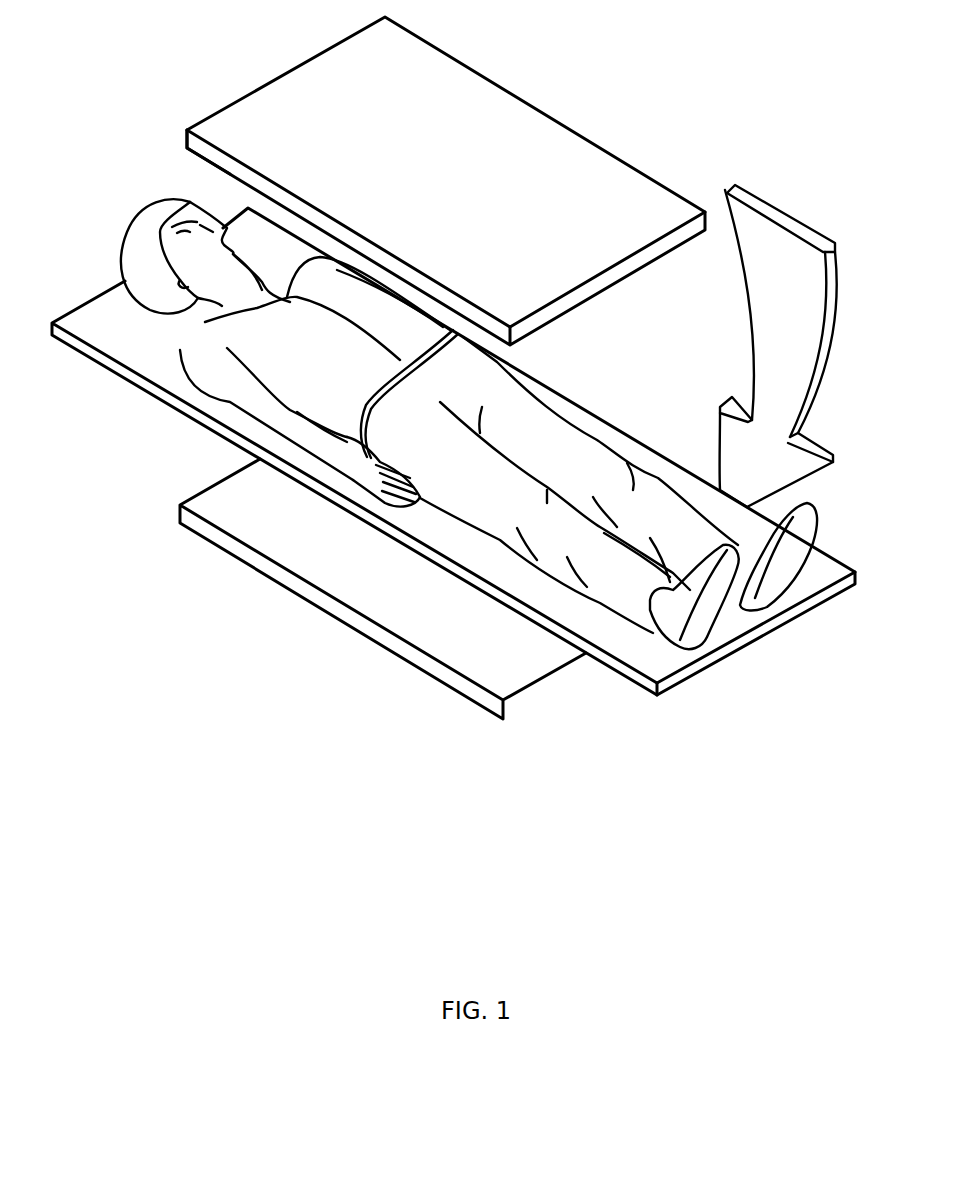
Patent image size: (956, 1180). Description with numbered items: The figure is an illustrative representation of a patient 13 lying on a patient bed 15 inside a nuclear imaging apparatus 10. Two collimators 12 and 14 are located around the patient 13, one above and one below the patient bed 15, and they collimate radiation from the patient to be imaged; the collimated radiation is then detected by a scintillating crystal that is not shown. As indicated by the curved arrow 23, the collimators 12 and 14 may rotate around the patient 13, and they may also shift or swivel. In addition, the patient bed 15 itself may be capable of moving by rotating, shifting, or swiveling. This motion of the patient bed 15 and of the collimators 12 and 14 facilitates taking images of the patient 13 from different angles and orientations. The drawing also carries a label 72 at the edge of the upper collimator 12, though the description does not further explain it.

The nuclear imaging apparatus 10 is at (186, 60).
The collimator 12 is at (460, 83).
The patient 13 is at (140, 260).
The collimator 14 is at (247, 555).
The patient bed 15 is at (88, 318).
The arrow 23 is at (805, 313).
The upper plate edge 72 is at (187, 143).